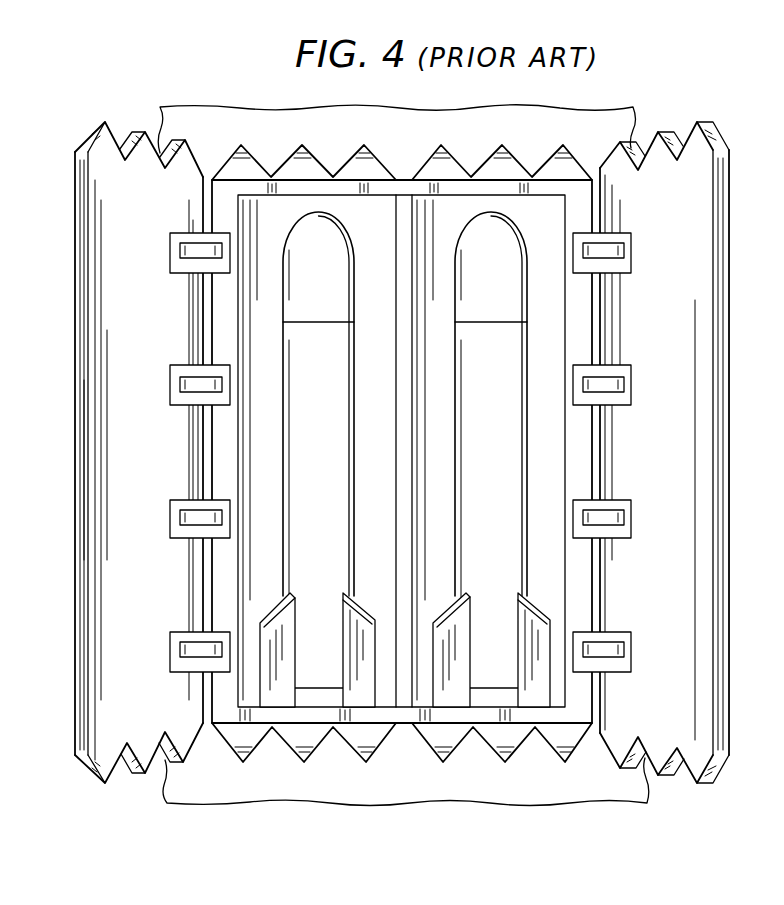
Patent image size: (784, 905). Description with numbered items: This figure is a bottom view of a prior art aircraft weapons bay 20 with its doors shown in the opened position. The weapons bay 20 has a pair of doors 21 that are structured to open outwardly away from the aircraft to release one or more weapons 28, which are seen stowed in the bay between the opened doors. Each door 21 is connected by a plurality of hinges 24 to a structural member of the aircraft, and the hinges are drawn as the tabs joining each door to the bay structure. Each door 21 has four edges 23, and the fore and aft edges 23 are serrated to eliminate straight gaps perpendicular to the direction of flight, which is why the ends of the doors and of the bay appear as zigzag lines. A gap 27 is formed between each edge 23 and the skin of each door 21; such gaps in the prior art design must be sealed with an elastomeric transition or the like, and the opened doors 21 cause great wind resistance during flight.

The aircraft weapons bay 20 is at (191, 820).
The door 21 is at (110, 290).
The edge 23 is at (92, 128).
The hinge 24 is at (625, 247).
The gap 27 is at (44, 450).
The weapon 28 is at (329, 468).